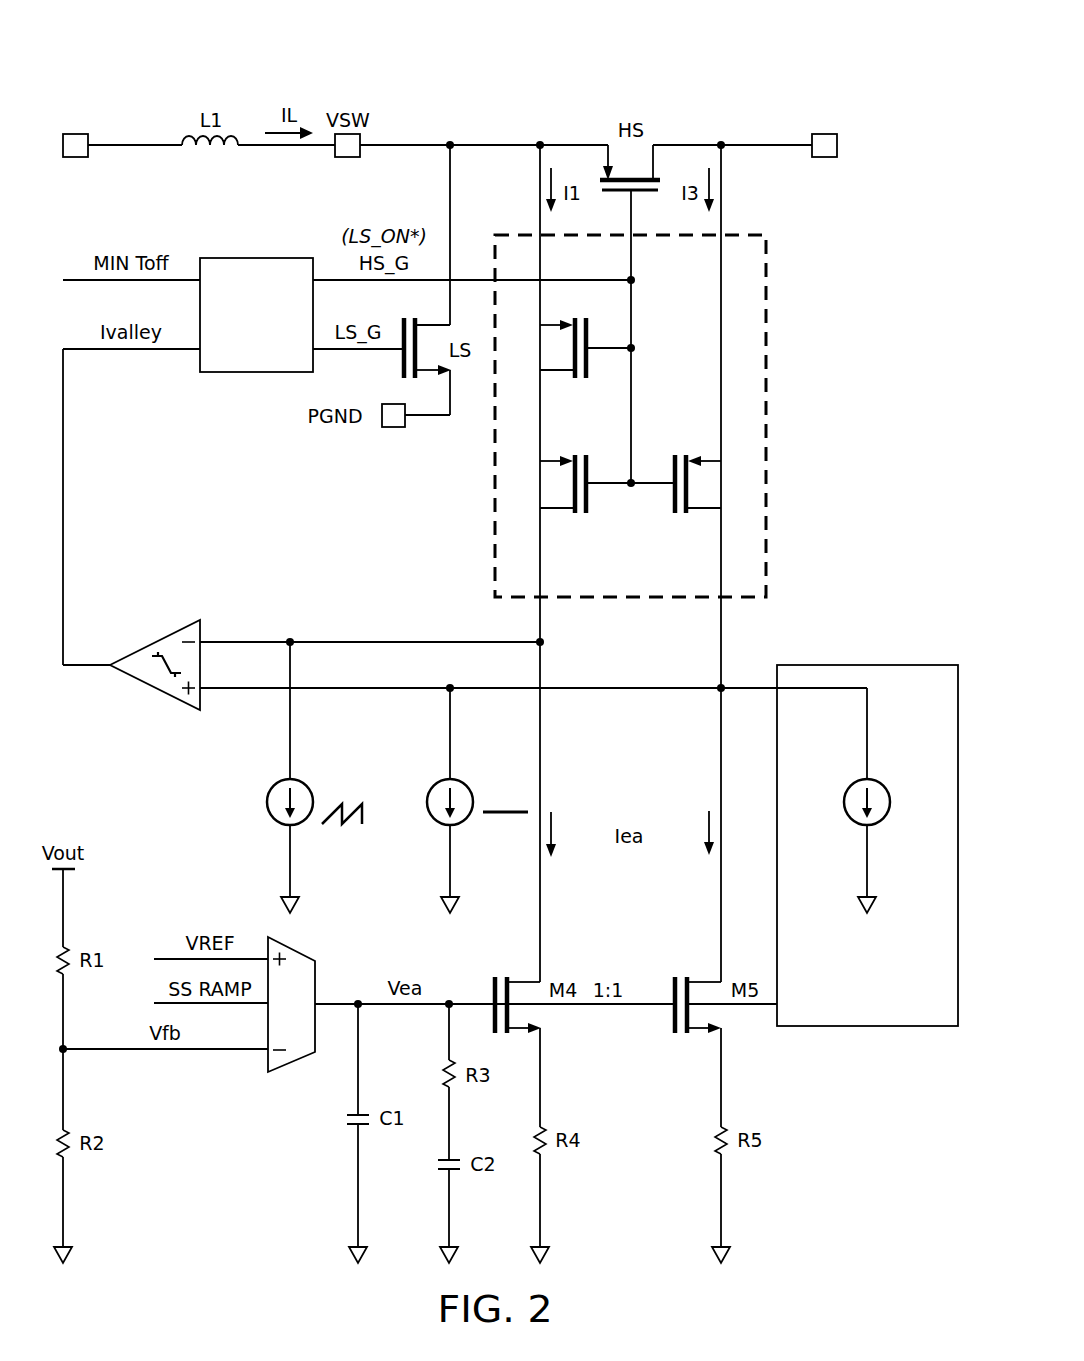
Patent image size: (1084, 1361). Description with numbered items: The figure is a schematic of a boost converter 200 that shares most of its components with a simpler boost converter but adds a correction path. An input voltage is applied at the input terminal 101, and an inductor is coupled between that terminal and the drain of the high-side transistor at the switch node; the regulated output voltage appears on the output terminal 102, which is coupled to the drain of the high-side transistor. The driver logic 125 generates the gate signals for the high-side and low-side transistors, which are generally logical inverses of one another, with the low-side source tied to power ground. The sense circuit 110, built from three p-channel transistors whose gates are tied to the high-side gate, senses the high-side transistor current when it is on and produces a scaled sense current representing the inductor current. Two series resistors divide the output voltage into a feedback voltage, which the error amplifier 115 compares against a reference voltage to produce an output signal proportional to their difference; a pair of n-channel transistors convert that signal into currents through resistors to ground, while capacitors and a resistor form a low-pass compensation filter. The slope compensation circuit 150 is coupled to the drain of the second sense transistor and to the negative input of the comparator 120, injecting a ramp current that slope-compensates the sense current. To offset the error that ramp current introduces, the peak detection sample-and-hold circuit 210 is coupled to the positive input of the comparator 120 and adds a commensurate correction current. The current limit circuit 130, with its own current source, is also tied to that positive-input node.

The boost converter 200 is at (654, 59).
The input terminal 101 is at (75, 158).
The output terminal 102 is at (821, 158).
The driver logic 125 is at (257, 258).
The sense circuit 110 is at (772, 372).
The comparator 120 is at (158, 640).
The slope compensation circuit 150 is at (283, 825).
The peak detection sample-and-hold circuit 210 is at (442, 825).
The error amplifier 115 is at (290, 1068).
The current limit circuit 130 is at (917, 1032).